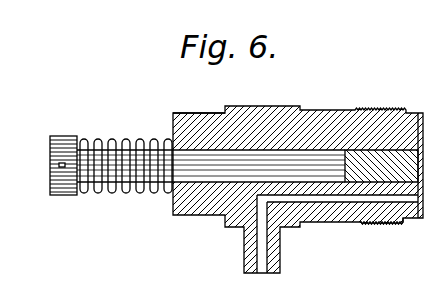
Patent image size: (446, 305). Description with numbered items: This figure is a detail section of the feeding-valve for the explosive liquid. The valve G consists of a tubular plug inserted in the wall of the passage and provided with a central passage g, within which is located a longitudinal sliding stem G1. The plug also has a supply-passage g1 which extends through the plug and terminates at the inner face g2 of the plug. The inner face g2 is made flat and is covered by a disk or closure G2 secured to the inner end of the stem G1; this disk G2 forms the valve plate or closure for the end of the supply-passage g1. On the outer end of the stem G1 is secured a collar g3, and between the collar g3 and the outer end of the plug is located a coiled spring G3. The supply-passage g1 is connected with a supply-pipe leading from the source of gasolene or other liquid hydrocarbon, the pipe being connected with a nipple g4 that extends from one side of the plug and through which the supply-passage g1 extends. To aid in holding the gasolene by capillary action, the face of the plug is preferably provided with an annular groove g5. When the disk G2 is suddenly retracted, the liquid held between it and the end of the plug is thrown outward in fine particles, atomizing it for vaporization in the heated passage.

The valve G is at (310, 122).
The sliding stem G1 is at (192, 160).
The disk or closure G2 is at (428, 137).
The coiled spring G3 is at (117, 140).
The central passage g is at (260, 152).
The supply-passage g1 is at (335, 225).
The inner face g2 is at (407, 221).
The collar g3 is at (62, 136).
The nipple g4 is at (245, 258).
The annular groove g5 is at (428, 133).